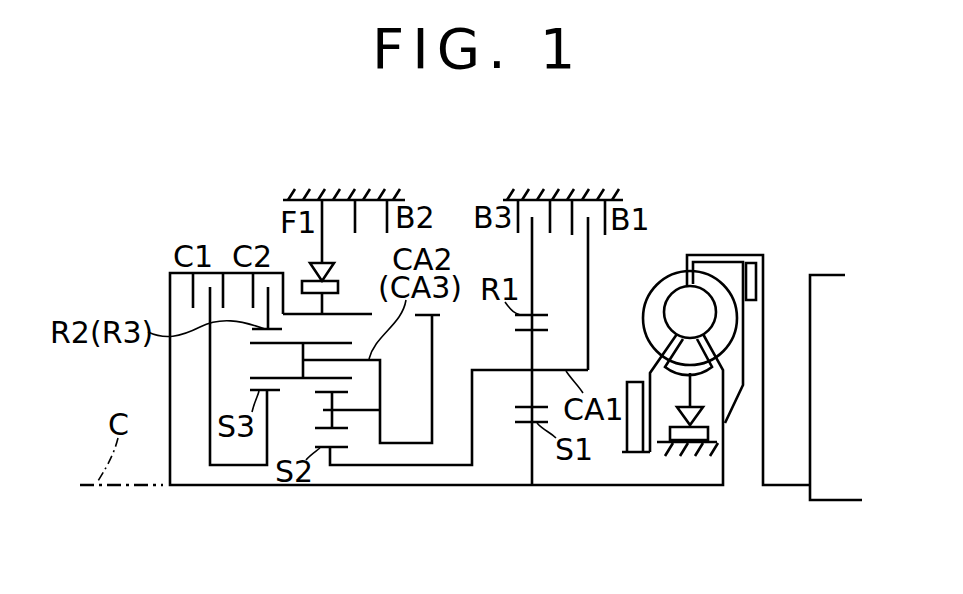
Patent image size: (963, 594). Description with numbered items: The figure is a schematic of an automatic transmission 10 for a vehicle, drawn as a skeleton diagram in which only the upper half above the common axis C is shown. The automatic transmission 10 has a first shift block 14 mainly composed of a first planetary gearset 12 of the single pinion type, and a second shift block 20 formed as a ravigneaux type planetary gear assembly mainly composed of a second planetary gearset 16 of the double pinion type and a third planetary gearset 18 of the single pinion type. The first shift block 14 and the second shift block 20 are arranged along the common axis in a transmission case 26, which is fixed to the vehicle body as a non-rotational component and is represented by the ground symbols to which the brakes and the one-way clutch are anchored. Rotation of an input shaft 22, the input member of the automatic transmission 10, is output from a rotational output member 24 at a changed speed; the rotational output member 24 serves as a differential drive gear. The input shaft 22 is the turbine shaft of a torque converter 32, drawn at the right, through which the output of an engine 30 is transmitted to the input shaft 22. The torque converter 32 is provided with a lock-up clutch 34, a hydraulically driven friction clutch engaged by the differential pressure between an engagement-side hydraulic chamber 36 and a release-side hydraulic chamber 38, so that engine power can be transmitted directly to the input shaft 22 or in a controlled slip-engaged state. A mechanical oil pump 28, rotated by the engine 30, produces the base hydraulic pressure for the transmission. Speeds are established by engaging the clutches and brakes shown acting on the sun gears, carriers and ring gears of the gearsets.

The automatic transmission 10 is at (628, 180).
The first planetary gearset 12 is at (533, 494).
The first shift block 14 is at (610, 497).
The second planetary gearset 16 is at (333, 494).
The third planetary gearset 18 is at (267, 495).
The second shift block 20 is at (210, 507).
The input shaft 22 is at (689, 487).
The rotational output member 24 is at (440, 314).
The transmission case 26 is at (351, 197).
The mechanical oil pump 28 is at (633, 382).
The engine 30 is at (824, 288).
The torque converter 32 is at (708, 242).
The lock-up clutch 34 is at (756, 282).
The engagement-side hydraulic chamber 36 is at (733, 263).
The release-side hydraulic chamber 38 is at (757, 310).